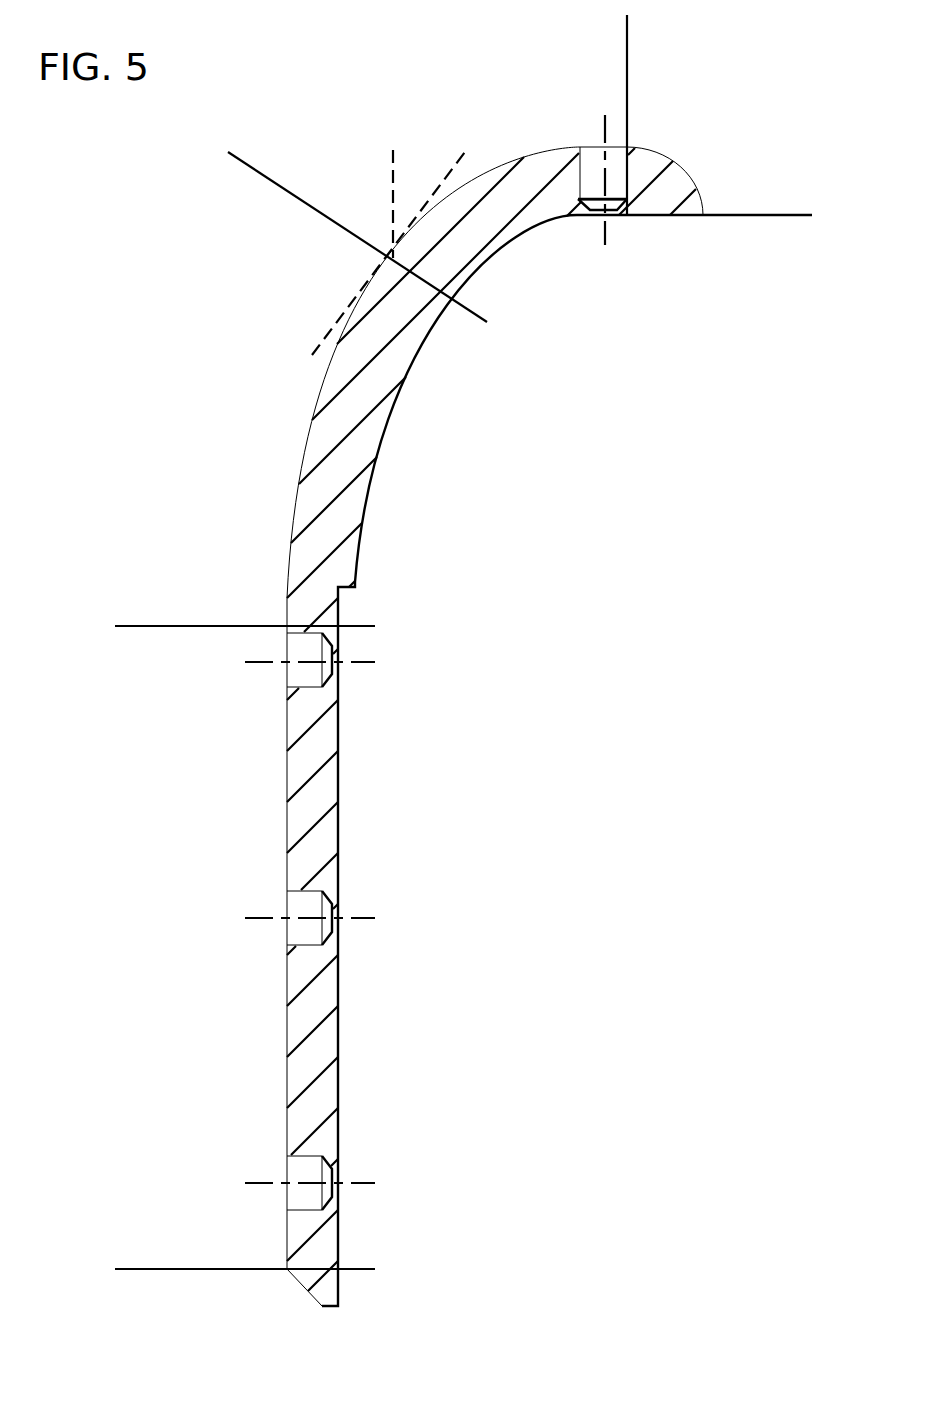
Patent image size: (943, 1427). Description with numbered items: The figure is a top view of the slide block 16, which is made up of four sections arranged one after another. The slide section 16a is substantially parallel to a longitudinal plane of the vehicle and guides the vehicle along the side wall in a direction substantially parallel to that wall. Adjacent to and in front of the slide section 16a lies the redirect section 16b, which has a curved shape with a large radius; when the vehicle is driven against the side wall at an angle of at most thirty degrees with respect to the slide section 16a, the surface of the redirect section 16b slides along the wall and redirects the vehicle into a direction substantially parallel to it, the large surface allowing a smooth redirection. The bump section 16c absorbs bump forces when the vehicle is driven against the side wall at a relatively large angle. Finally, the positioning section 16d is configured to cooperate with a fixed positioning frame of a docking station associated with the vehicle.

The slide block 16 is at (363, 553).
The slide section 16a is at (175, 626).
The redirect section 16b is at (302, 196).
The bump section 16c is at (627, 32).
The positioning section 16d is at (627, 30).